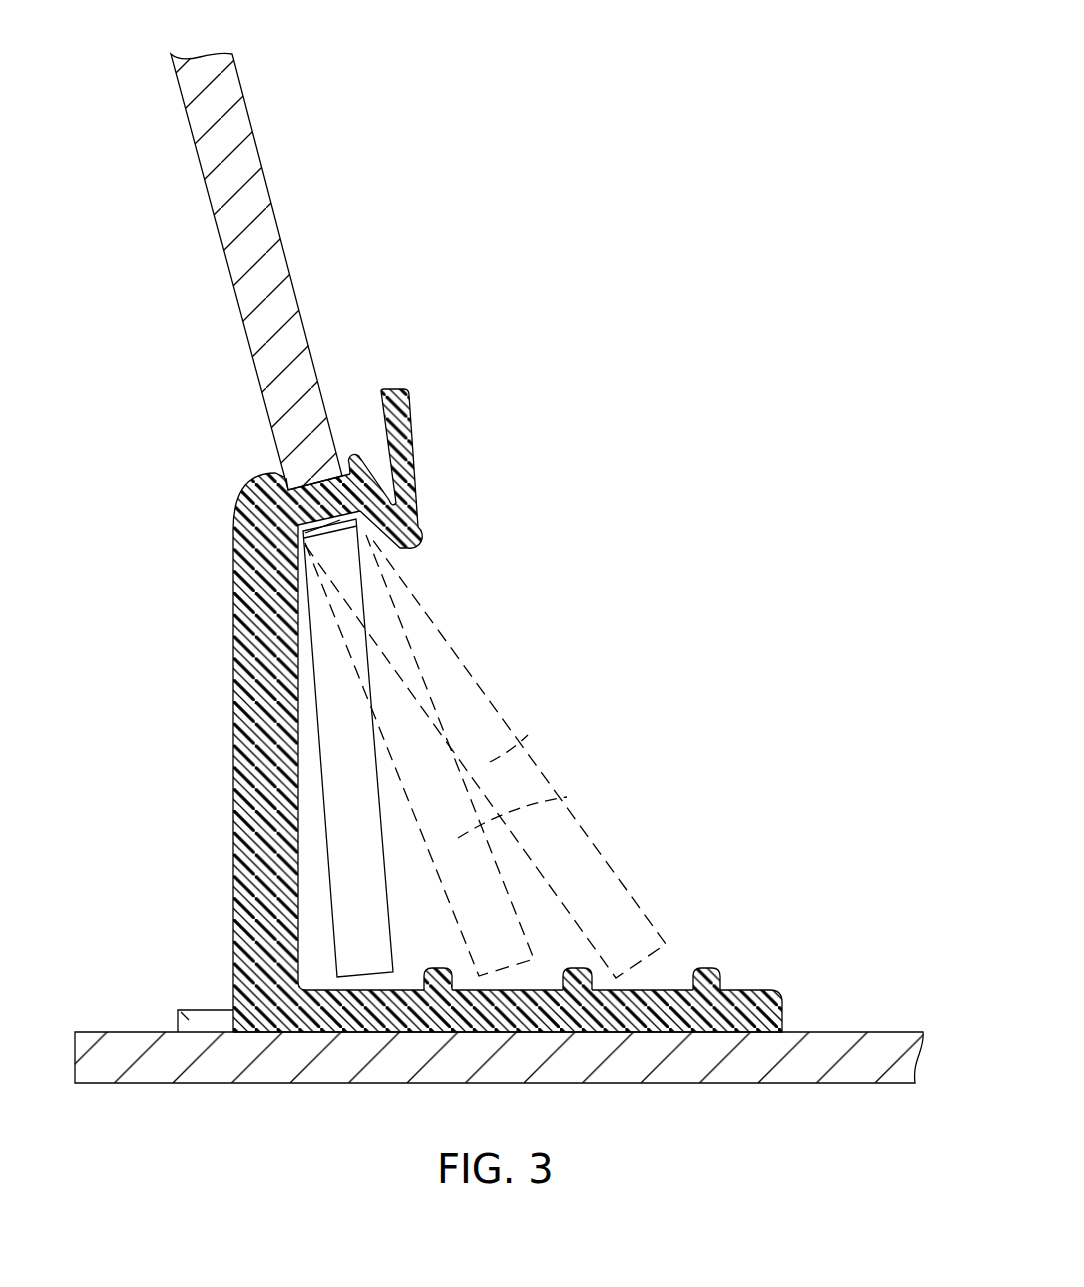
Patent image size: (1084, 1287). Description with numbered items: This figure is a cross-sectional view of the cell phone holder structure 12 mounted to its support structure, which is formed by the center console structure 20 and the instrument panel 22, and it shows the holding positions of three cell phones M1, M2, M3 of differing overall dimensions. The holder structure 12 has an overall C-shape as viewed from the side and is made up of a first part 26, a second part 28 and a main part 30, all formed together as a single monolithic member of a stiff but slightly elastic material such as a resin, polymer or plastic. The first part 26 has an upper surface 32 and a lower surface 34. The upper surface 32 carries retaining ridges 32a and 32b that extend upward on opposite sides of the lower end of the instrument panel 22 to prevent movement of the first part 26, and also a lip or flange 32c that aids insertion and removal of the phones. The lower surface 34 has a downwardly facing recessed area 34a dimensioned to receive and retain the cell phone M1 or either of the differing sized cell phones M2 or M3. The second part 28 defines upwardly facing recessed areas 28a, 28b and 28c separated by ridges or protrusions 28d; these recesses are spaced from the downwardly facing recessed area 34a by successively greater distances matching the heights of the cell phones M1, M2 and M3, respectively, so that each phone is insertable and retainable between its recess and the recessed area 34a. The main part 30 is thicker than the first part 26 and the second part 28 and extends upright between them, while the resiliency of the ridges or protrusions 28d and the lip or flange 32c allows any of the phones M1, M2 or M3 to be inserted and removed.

The cell phone holder structure 12 is at (710, 444).
The center console structure 20 is at (845, 1032).
The instrument panel 22 is at (245, 205).
The first part 26 is at (361, 467).
The second part 28 is at (505, 958).
The first recessed area 28a is at (362, 988).
The second recessed area 28b is at (492, 988).
The third recessed area 28c is at (656, 990).
The ridges or protrusions 28d is at (432, 972).
The main part 30 is at (472, 710).
The upper surface 32 is at (292, 486).
The retaining ridge 32a is at (351, 457).
The retaining ridge 32b is at (268, 474).
The lip or flange 32c is at (385, 388).
The lower surface 34 is at (398, 548).
The downwardly facing recessed area 34a is at (362, 545).
The cell phone M1 is at (330, 748).
The cell phone M2 is at (568, 798).
The cell phone M3 is at (528, 745).